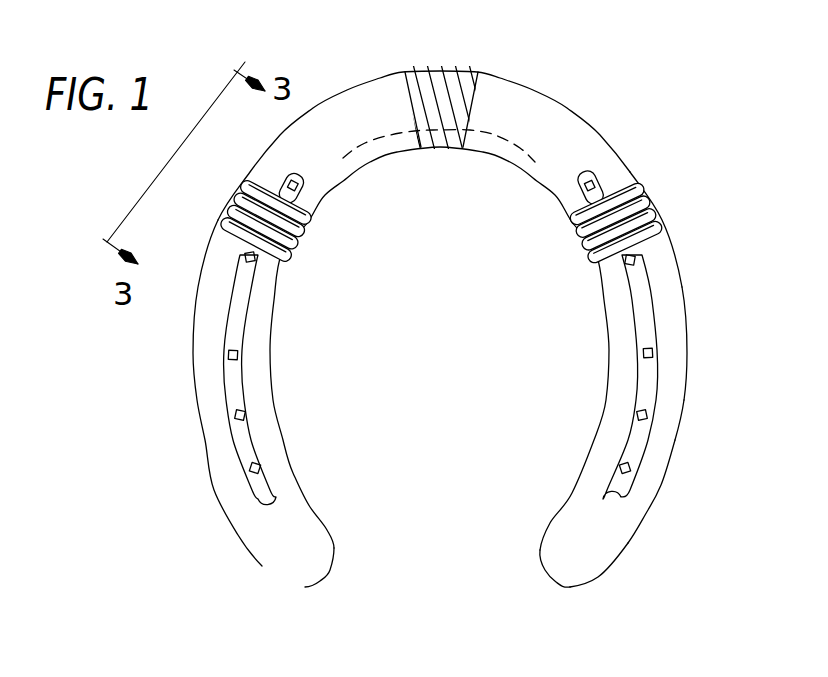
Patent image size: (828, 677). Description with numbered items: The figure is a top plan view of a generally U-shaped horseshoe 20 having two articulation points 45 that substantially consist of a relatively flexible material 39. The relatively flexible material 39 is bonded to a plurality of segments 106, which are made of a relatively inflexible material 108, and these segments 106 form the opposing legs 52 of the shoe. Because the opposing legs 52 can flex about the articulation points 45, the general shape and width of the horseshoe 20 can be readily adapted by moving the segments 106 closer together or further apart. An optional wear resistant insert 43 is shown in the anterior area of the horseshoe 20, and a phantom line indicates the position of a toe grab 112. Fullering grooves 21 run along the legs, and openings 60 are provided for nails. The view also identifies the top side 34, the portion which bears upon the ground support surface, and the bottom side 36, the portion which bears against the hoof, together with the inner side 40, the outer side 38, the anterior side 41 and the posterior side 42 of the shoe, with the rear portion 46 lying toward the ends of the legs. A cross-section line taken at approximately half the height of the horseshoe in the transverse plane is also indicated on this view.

The horseshoe 20 is at (632, 114).
The fullering grooves 21 is at (230, 383).
The top side 34 is at (660, 272).
The bottom side 36 is at (665, 331).
The outer side 38 is at (674, 451).
The relatively flexible material 39 is at (243, 185).
The inner side 40 is at (581, 467).
The anterior side 41 is at (442, 70).
The posterior side 42 is at (563, 587).
The wear resistant insert 43 is at (425, 80).
The articulation points 45 is at (311, 224).
The rear portion 46 is at (626, 545).
The opposing legs 52 is at (657, 490).
The openings 60 is at (647, 415).
The segments 106 is at (492, 158).
The relatively inflexible material 108 is at (391, 156).
The toe grab 112 is at (500, 137).